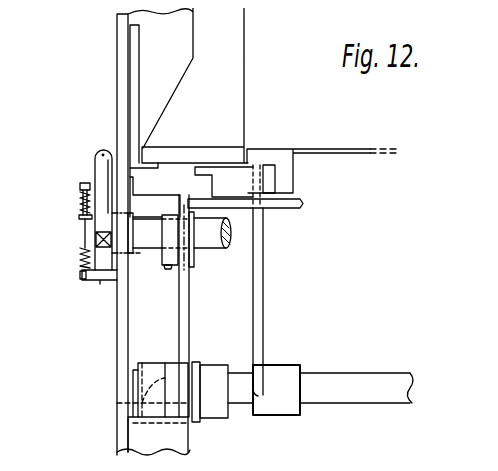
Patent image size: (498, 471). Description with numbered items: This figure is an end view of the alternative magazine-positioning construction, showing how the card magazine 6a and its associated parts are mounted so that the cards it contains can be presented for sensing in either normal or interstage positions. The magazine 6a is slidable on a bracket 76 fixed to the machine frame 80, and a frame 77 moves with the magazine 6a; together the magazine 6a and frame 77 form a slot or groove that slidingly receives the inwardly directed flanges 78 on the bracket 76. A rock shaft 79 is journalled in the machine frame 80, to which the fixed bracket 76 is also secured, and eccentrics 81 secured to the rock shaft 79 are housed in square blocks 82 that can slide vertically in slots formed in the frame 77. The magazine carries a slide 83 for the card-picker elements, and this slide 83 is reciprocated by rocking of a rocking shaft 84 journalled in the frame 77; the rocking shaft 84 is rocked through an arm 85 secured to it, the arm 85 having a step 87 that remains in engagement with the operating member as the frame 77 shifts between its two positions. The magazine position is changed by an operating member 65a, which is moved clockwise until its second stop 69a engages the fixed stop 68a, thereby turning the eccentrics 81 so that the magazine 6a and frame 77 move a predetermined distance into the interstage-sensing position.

The bracket 76 is at (131, 33).
The card magazine 6a is at (228, 41).
The inwardly directed flanges 78 is at (118, 165).
The operating member 65a is at (98, 176).
The second stop 69a is at (84, 219).
The eccentrics 81 is at (160, 236).
The fixed stop 68a is at (86, 275).
The machine frame 80 is at (118, 289).
The square blocks 82 is at (168, 269).
The frame 77 is at (190, 287).
The rock shaft 79 is at (218, 238).
The slide 83 is at (294, 184).
The step 87 is at (152, 408).
The arm 85 is at (199, 422).
The rocking shaft 84 is at (340, 396).